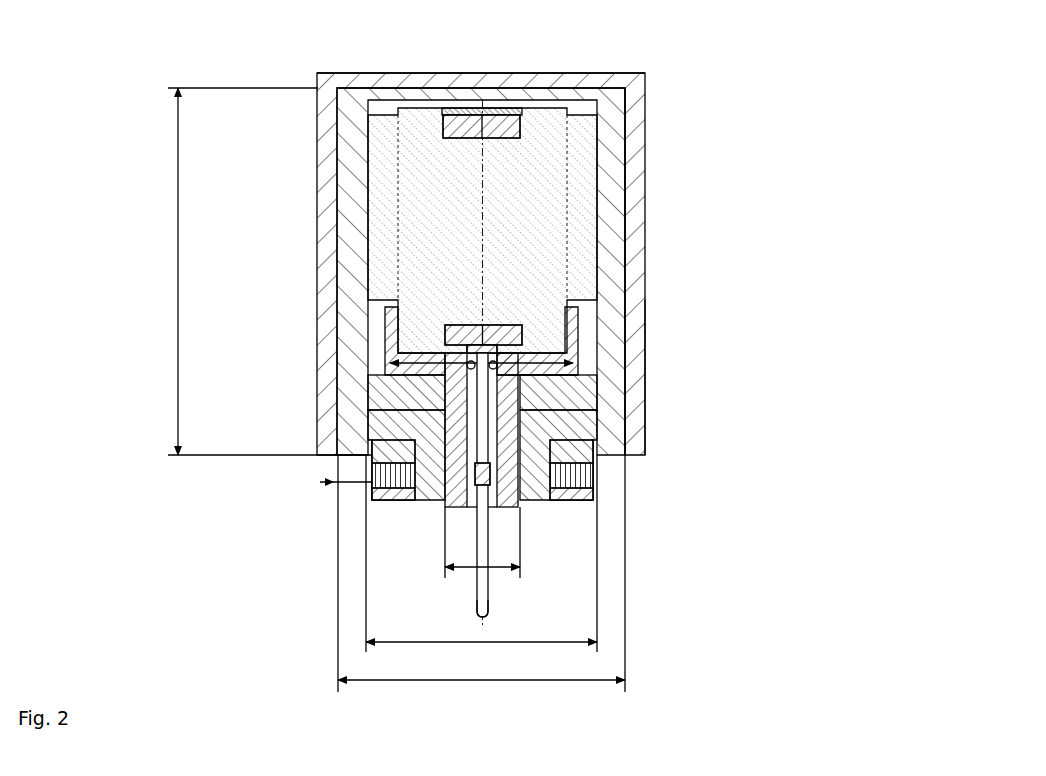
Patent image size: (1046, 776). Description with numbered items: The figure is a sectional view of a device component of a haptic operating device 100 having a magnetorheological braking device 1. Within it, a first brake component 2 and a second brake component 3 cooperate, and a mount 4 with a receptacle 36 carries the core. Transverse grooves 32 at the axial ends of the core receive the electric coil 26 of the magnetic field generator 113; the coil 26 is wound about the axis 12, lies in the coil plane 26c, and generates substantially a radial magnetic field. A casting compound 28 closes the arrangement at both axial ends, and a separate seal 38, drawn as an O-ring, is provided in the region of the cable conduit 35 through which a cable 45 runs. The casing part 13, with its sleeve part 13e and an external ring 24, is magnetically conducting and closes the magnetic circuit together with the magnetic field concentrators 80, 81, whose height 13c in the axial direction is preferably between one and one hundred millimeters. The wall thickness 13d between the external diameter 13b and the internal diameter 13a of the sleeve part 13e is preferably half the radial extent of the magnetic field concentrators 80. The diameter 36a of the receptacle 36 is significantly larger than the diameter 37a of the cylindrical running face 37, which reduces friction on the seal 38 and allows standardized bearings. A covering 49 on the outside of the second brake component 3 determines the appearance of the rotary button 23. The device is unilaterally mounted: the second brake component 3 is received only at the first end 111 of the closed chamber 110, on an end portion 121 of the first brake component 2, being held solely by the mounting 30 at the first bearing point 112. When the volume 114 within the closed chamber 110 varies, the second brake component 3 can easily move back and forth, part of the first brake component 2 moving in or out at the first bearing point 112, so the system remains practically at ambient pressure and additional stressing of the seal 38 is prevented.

The magnetorheological braking device 1 is at (596, 264).
The haptic operating device 100 is at (758, 128).
The brake component 2 is at (531, 509).
The brake component 3 is at (308, 240).
The mount, receptacle 4 is at (448, 446).
The receptacle 36 is at (453, 475).
The axis 12 is at (484, 622).
The casing part, rotating part 13 is at (343, 135).
The internal diameter 13a is at (437, 641).
The external diameter 13b is at (407, 680).
The height 13c is at (178, 293).
The wall thickness 13d is at (357, 487).
The sleeve part 13e is at (625, 287).
The rotary button 23 is at (693, 73).
The external ring 24 is at (689, 271).
The coil 26 is at (503, 125).
The coil plane 26c is at (480, 243).
The casting compound 28 is at (452, 112).
The mounting 30 is at (565, 420).
The transverse groove 32 is at (522, 331).
The cable conduit 35 is at (496, 509).
The external diameter 36a is at (433, 425).
The cylindrical running face 37 is at (575, 463).
The external diameter 37a is at (497, 568).
The seal 38 is at (575, 378).
The cable 45 is at (477, 553).
The covering 49 is at (643, 378).
The magnetic field concentrator 80 is at (498, 230).
The magnetic field concentrator 81 is at (380, 173).
The closed chamber 110 is at (600, 87).
The first end of 110 111 is at (560, 445).
The first bearing point 112 is at (370, 460).
The end portion of 2 121 is at (273, 482).
The magnetic field generator 113 is at (378, 312).
The volume of 110 114 is at (395, 365).